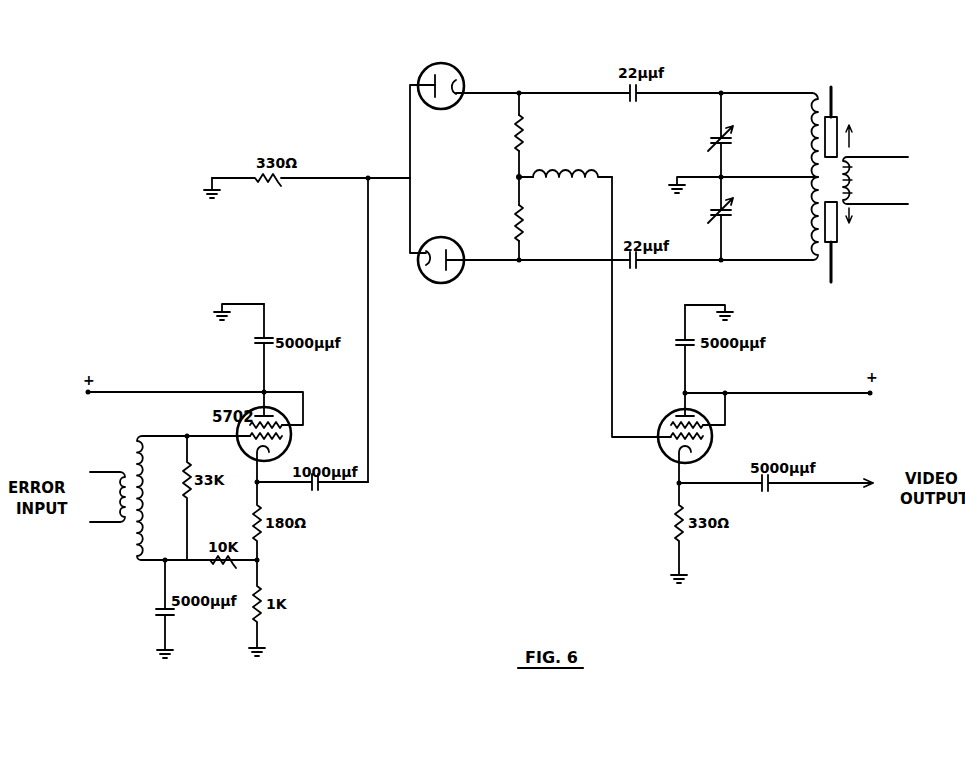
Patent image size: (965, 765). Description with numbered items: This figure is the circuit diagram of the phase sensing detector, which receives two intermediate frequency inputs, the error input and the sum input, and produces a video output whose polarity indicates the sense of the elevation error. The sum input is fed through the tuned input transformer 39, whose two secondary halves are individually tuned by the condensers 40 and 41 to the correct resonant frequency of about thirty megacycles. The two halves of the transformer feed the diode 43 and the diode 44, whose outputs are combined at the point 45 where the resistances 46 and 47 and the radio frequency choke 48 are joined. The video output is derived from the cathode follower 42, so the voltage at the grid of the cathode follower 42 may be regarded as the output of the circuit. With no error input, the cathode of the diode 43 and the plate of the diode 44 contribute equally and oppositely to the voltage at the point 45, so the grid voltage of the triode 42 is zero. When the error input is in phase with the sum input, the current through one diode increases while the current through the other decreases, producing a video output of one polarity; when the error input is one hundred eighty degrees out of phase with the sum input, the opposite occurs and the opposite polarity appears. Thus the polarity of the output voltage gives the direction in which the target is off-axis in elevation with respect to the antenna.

The tuned input transformer 39 is at (853, 140).
The condenser 40 is at (714, 138).
The condenser 41 is at (710, 213).
The cathode follower 42 is at (660, 452).
The diode 43 is at (458, 70).
The diode 44 is at (458, 276).
The point 45 is at (516, 177).
The resistance 46 is at (515, 134).
The resistance 47 is at (515, 219).
The radio frequency choke 48 is at (570, 181).